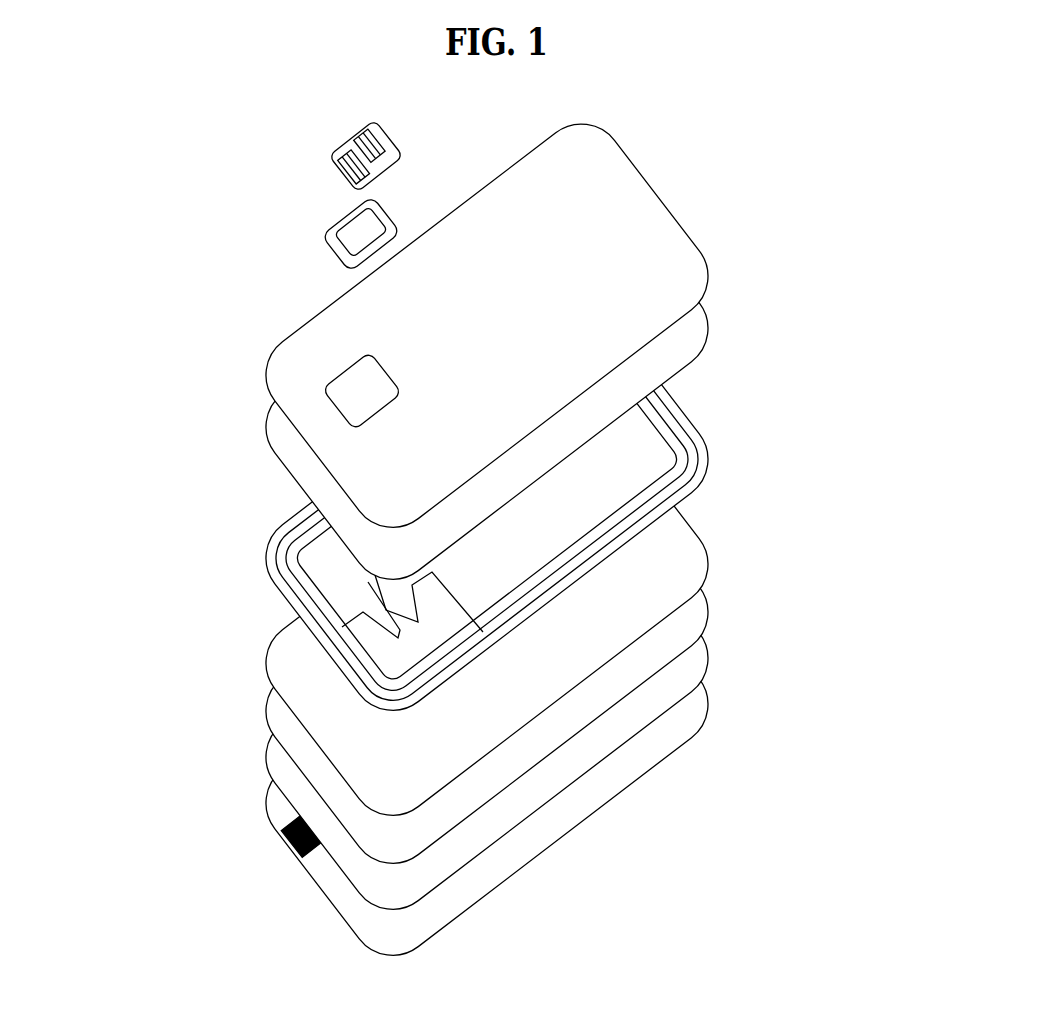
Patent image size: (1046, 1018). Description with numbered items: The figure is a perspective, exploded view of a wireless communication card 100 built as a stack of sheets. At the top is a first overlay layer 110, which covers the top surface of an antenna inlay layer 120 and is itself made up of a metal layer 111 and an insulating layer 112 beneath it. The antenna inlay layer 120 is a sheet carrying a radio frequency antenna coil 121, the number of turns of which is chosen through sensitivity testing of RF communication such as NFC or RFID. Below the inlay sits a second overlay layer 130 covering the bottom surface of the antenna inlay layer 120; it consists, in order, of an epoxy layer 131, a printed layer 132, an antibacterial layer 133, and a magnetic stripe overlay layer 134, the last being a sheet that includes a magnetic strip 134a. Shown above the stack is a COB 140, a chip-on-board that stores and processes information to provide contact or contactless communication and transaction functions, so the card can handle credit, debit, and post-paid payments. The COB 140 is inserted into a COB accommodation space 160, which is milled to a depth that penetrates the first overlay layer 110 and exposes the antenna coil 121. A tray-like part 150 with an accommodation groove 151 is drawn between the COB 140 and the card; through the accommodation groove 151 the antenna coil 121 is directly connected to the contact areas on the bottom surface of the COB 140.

The wireless communication card 100 is at (103, 139).
The first overlay layer 110 is at (590, 351).
The metal layer 111 is at (691, 236).
The insulating layer 112 is at (708, 328).
The antenna inlay layer 120 is at (530, 508).
The antenna coil 121 is at (705, 447).
The second overlay layer 130 is at (846, 573).
The epoxy layer 131 is at (708, 552).
The printed layer 132 is at (709, 614).
The antibacterial layer 133 is at (709, 661).
The magnetic stripe overlay layer 134 is at (502, 753).
The magnetic strip 134a is at (290, 833).
The COB 140 is at (406, 158).
The card tray 150 is at (321, 219).
The accommodation groove 151 is at (350, 233).
The COB accommodation space 160 is at (328, 393).